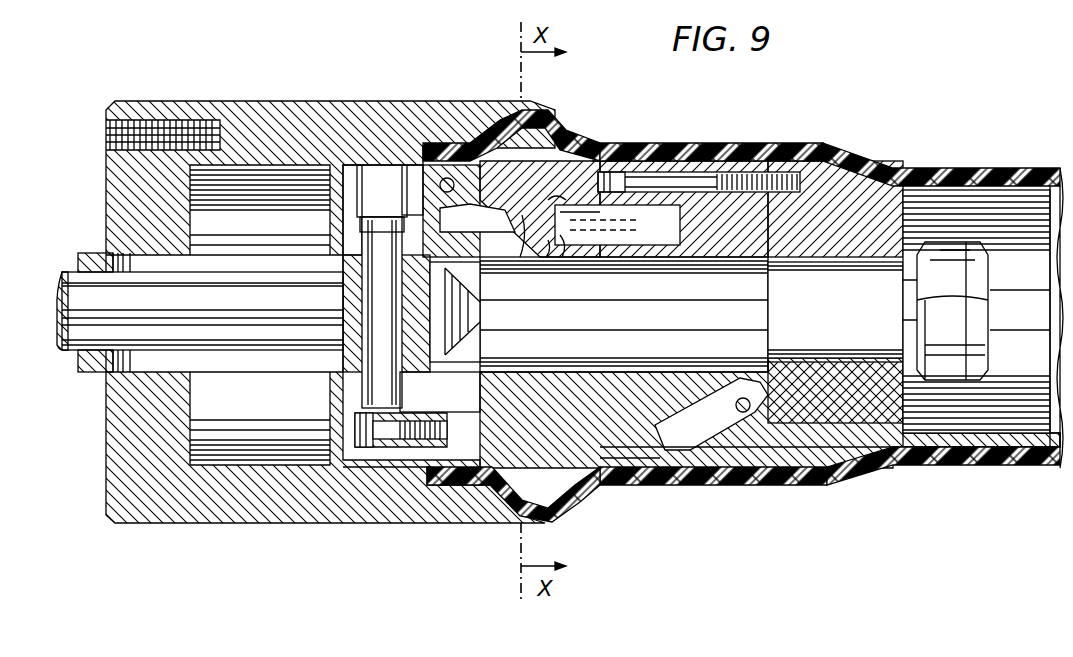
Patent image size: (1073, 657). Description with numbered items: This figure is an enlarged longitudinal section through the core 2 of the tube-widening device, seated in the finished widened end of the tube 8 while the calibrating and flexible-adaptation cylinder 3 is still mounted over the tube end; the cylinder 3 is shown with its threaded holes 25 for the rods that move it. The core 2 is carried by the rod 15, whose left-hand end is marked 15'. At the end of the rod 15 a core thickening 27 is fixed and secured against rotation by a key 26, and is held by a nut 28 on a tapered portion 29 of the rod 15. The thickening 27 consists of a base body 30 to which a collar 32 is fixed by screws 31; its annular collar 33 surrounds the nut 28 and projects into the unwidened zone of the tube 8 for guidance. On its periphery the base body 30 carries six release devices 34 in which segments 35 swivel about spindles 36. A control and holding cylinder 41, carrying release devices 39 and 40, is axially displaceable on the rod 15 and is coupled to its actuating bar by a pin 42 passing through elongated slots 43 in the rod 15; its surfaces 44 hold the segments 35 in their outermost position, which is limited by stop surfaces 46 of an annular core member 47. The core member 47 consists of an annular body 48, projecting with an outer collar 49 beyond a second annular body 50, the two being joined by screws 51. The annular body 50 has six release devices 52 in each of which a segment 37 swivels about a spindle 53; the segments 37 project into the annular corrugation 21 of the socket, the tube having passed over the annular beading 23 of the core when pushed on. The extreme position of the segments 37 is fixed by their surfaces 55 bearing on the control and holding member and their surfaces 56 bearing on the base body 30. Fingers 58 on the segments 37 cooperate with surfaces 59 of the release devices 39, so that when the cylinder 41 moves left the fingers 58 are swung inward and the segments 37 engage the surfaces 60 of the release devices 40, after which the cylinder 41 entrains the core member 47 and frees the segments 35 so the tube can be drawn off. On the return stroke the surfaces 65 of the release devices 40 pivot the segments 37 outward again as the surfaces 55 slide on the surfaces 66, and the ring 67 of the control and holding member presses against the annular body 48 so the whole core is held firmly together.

The core 2 is at (880, 170).
The calibrating and flexible-adaptation cylinder 3 is at (258, 520).
The tube 8 is at (1030, 170).
The rod 15 is at (415, 307).
The shaft end 15' is at (42, 305).
The annular corrugation 21 is at (520, 108).
The annular beading 23 is at (545, 518).
The threaded holes 25 is at (168, 122).
The key 26 is at (842, 256).
The core thickening 27 is at (975, 190).
The nut 28 is at (990, 300).
The tapered portion 29 is at (838, 362).
The base body 30 is at (885, 463).
The screws 31 is at (680, 178).
The collar 32 is at (770, 485).
The annular collar 33 is at (990, 450).
The release devices 34 is at (752, 356).
The segments 35 is at (662, 474).
The spindles 36 is at (732, 408).
The segments 37 is at (566, 140).
The release devices 39 is at (490, 240).
The release devices 40 is at (650, 248).
The control and holding cylinder 41 is at (770, 413).
The pin 42 is at (345, 300).
The elongated slots 43 is at (262, 374).
The surfaces 44 is at (632, 474).
The stop surfaces 46 is at (470, 462).
The annular core member 47 is at (375, 470).
The annular body 48 is at (363, 170).
The outer collar 49 is at (440, 165).
The second annular body 50 is at (420, 470).
The screws 51 is at (440, 392).
The release devices 52 is at (420, 170).
The spindle 53 is at (456, 185).
The surfaces 55 is at (575, 214).
The surfaces 56 is at (602, 160).
The fingers 58 is at (455, 286).
The surfaces 59 is at (526, 240).
The surfaces 60 is at (700, 232).
The surfaces 65 is at (582, 245).
The surfaces 66 is at (550, 250).
The ring 67 is at (340, 245).